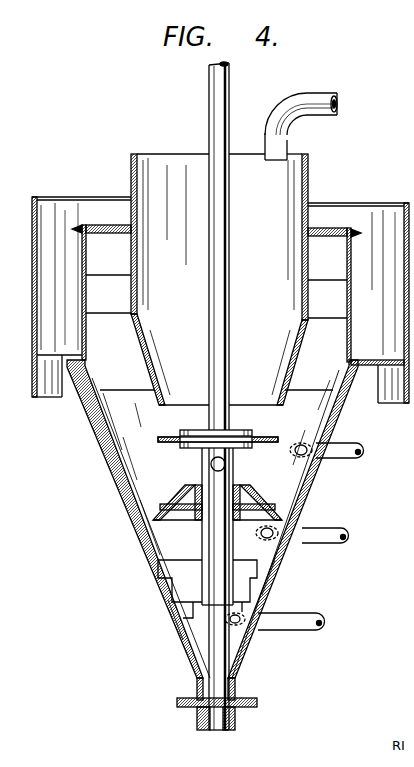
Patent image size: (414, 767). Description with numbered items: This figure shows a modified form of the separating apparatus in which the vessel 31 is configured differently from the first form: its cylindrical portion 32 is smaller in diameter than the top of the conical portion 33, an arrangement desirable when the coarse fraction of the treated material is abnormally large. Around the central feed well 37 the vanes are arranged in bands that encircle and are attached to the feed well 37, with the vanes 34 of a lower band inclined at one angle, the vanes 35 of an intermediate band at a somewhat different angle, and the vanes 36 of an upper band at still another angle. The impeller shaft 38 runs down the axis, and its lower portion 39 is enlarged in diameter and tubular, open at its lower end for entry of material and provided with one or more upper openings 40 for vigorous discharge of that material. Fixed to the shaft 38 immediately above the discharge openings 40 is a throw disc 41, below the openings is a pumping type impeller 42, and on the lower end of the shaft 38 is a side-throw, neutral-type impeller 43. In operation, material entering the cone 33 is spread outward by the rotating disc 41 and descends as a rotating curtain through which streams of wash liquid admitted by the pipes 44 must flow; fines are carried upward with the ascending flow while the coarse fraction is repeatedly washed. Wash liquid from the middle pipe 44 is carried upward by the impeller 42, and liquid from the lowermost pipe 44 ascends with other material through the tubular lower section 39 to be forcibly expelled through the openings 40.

The vessel 31 is at (110, 497).
The cylindrical portion 32 is at (352, 297).
The conical portion 33 is at (348, 410).
The vanes of a lower band 34 is at (98, 336).
The vanes of an intermediate band 35 is at (100, 293).
The vanes of an upper band 36 is at (96, 254).
The feed well 37 is at (311, 181).
The impeller shaft 38 is at (215, 104).
The lower portion of the impeller shaft 39 is at (212, 537).
The upper openings 40 is at (211, 464).
The throw disc 41 is at (171, 434).
The pumping type impeller 42 is at (270, 503).
The side-throw impeller 43 is at (258, 570).
The pipes 44 is at (352, 458).